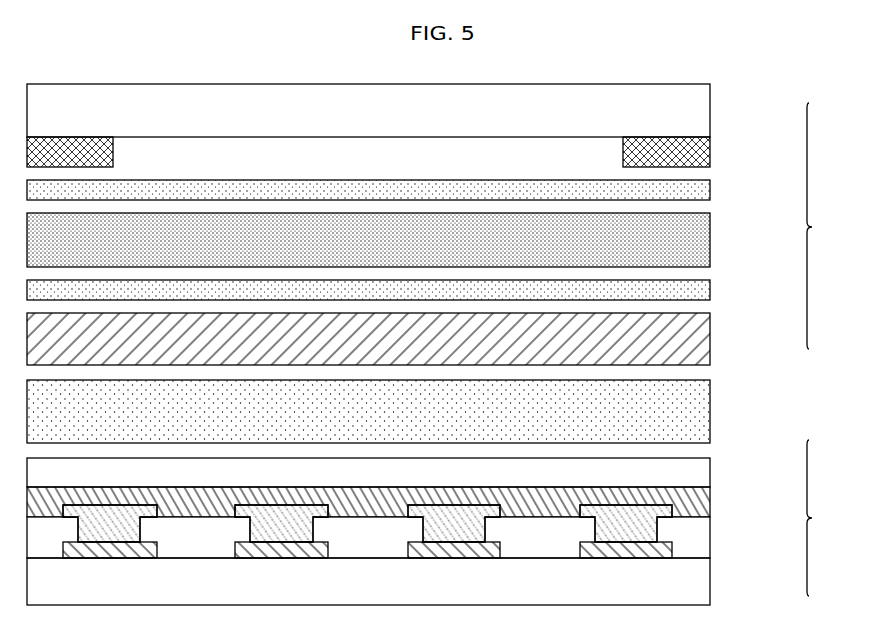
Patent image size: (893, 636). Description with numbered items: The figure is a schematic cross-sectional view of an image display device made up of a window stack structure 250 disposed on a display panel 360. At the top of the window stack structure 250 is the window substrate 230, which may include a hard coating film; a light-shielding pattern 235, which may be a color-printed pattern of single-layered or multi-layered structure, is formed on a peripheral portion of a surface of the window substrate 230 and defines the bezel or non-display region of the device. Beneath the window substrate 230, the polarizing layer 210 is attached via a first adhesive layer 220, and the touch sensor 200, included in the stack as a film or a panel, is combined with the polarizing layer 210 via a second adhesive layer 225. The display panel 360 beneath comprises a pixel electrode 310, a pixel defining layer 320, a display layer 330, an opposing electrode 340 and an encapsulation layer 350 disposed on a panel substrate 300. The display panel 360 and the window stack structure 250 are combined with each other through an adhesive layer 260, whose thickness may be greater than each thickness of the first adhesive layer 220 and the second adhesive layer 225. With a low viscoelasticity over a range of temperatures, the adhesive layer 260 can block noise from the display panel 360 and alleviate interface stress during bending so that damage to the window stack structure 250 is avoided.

The touch sensor 200 is at (710, 334).
The polarizing layer 210 is at (710, 243).
The first adhesive layer 220 is at (710, 190).
The second adhesive layer 225 is at (710, 290).
The window substrate 230 is at (710, 113).
The light-shielding pattern 235 is at (710, 150).
The window stack structure 250 is at (833, 226).
The adhesive layer 260 is at (710, 410).
The panel substrate 300 is at (702, 583).
The pixel electrode 310 is at (672, 548).
The pixel defining layer 320 is at (702, 528).
The display layer 330 is at (705, 512).
The opposing electrode 340 is at (700, 496).
The encapsulation layer 350 is at (703, 473).
The display panel 360 is at (833, 518).